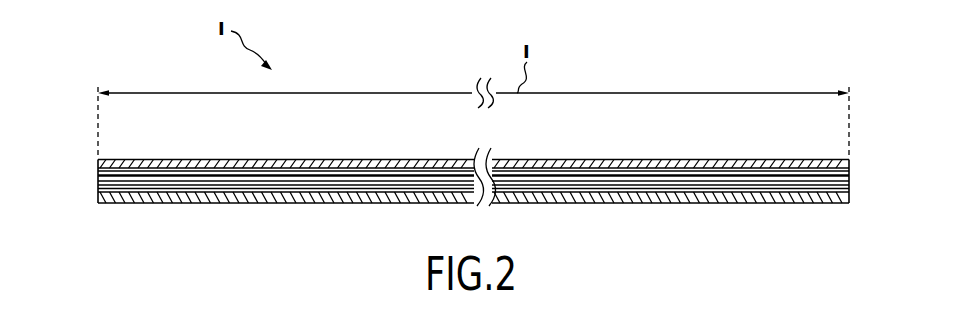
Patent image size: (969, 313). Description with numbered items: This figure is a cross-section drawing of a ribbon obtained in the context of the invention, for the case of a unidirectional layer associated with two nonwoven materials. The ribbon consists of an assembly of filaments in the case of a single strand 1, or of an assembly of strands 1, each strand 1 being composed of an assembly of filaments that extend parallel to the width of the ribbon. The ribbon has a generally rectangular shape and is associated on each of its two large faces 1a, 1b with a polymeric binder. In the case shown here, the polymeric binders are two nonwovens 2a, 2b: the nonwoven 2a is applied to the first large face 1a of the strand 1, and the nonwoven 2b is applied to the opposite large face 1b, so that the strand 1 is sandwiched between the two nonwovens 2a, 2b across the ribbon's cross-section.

The strand 1 is at (98, 177).
The large face 1a is at (207, 164).
The nonwoven 2a is at (270, 164).
The large face 1b is at (191, 200).
The nonwoven 2b is at (278, 200).